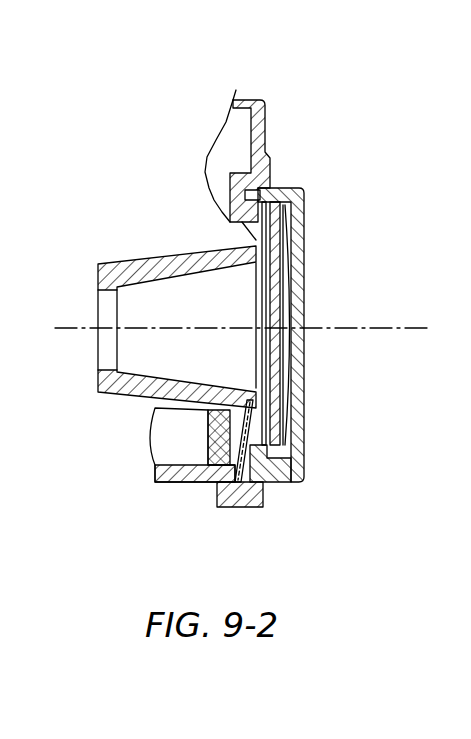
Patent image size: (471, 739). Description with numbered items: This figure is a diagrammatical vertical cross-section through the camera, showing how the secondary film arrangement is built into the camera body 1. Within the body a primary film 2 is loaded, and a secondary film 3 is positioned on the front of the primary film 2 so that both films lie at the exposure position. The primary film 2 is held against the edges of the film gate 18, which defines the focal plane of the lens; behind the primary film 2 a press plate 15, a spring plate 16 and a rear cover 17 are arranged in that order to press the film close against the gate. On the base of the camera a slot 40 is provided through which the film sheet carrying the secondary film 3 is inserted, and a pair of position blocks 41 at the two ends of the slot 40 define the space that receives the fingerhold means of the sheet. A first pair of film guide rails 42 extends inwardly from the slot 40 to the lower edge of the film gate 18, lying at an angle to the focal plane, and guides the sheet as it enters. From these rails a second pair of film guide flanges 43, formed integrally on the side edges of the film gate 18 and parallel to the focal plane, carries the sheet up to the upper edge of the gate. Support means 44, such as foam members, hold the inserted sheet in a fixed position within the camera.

The camera body 1 is at (156, 258).
The primary film 2 is at (303, 233).
The secondary film 3 is at (283, 314).
The press plate 15 is at (305, 195).
The spring plate 16 is at (303, 267).
The rear cover 17 is at (280, 187).
The film gate 18 is at (237, 214).
The slot 40 is at (217, 487).
The position block 41 is at (262, 503).
The first pair of film guide rails 42 is at (283, 458).
The second pair of film guide flanges 43 is at (283, 370).
The support means 44 is at (207, 440).